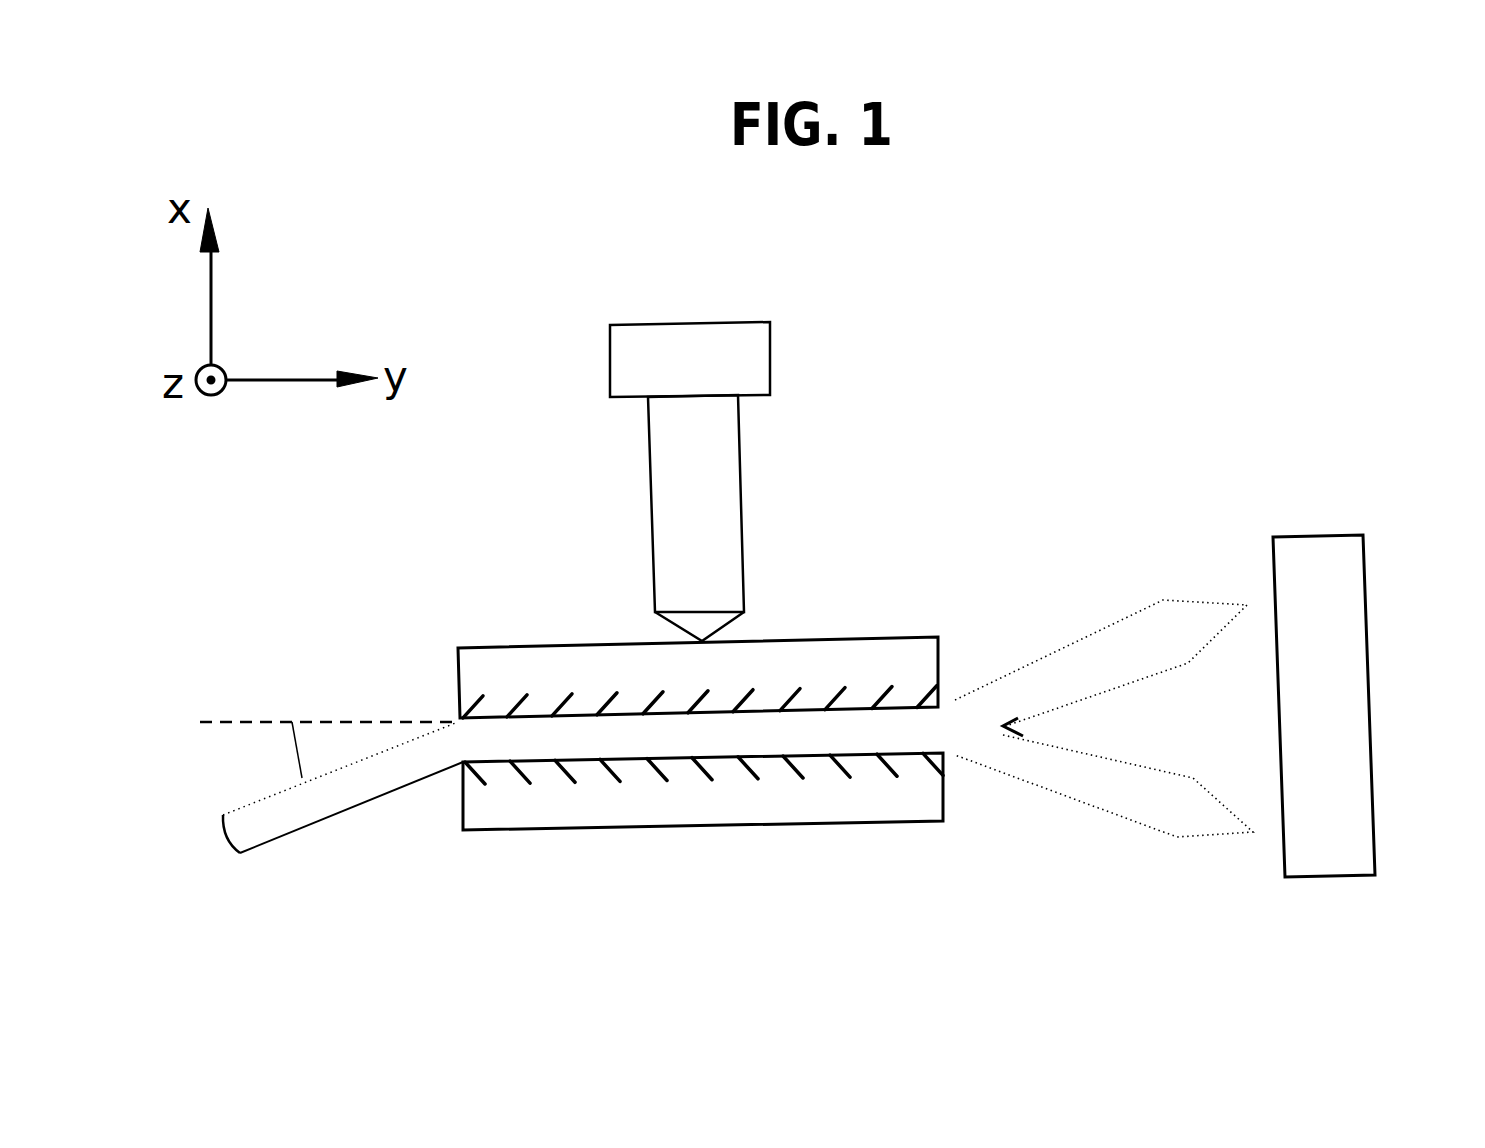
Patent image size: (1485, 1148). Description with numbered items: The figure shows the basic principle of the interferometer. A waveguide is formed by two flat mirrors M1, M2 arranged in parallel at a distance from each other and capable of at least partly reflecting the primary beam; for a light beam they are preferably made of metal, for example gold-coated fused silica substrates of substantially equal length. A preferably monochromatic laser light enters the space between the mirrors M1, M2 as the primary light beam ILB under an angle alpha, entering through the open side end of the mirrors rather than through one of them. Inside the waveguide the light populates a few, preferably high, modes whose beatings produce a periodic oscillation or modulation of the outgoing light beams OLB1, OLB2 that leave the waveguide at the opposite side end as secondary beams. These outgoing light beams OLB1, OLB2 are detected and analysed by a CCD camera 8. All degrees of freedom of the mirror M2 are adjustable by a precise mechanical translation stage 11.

The mechanical translation stage 11 is at (710, 503).
The charged coupled device (CCD) camera 8 is at (1345, 607).
The mirror M1 is at (542, 780).
The mirror M2 is at (535, 680).
The primary light beam ILB is at (331, 822).
The outgoing light beam OLB1 is at (1101, 627).
The outgoing light beam OLB2 is at (1104, 816).